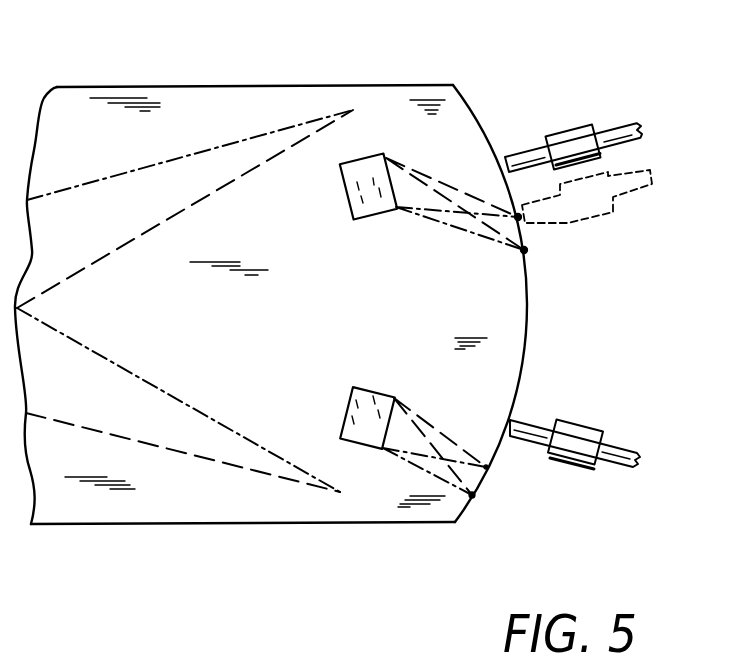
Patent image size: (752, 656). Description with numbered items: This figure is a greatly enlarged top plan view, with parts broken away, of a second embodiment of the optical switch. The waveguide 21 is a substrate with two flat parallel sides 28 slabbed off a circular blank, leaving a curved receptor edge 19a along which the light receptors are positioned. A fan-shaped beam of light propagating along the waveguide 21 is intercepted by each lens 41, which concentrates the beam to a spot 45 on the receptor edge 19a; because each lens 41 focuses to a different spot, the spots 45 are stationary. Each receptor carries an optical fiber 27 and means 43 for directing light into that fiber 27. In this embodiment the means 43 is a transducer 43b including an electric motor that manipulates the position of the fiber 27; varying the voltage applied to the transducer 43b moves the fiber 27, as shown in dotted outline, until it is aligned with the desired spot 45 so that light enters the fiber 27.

The receptor edge 19a is at (528, 328).
The waveguide 21 is at (118, 515).
The receptor optical fiber 27 is at (620, 145).
The parallel sides 28 is at (213, 85).
The lens 41 is at (370, 160).
The means for directing light 43 is at (602, 275).
The transducer 43b is at (578, 128).
The spot 45 is at (521, 218).